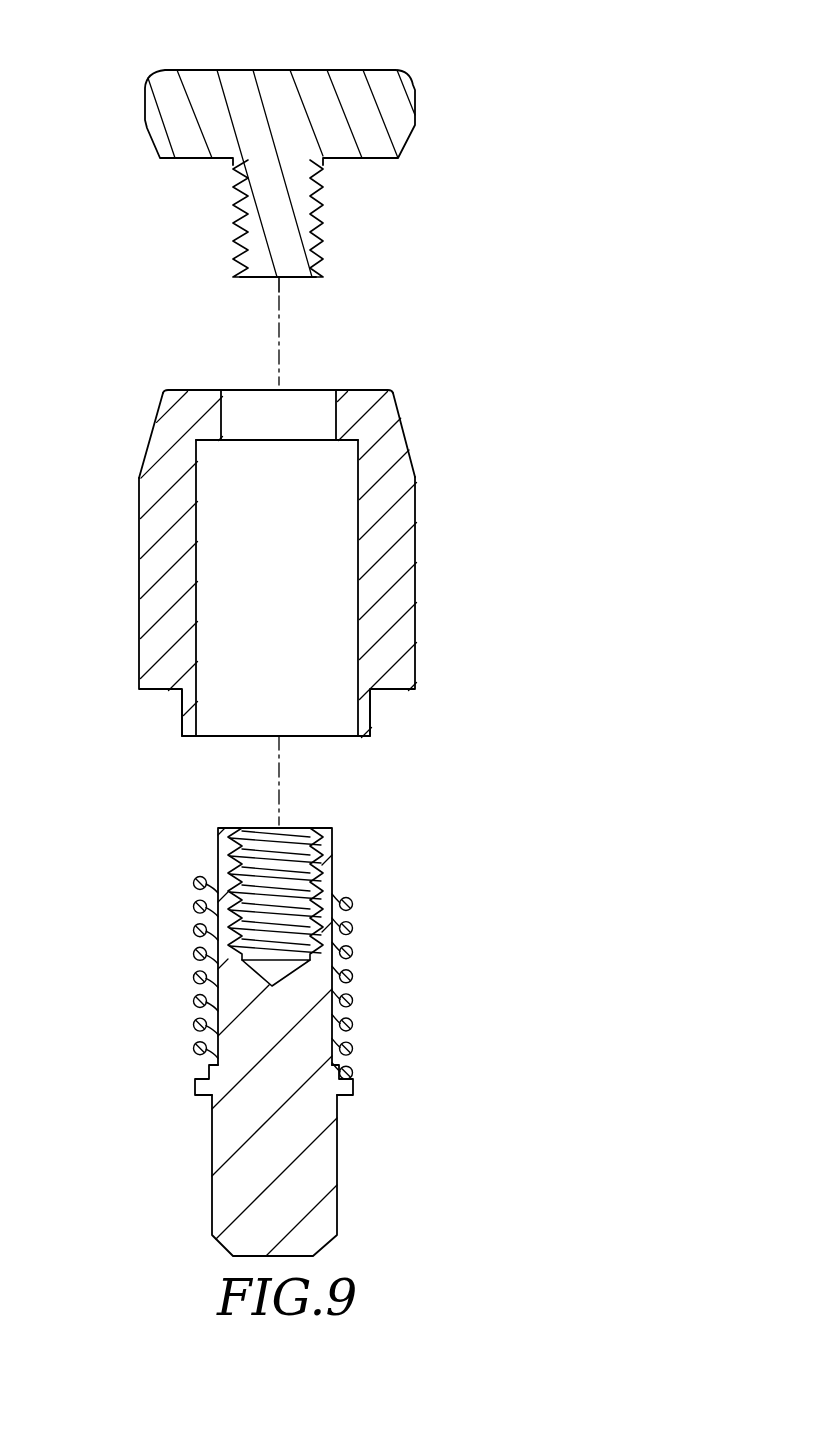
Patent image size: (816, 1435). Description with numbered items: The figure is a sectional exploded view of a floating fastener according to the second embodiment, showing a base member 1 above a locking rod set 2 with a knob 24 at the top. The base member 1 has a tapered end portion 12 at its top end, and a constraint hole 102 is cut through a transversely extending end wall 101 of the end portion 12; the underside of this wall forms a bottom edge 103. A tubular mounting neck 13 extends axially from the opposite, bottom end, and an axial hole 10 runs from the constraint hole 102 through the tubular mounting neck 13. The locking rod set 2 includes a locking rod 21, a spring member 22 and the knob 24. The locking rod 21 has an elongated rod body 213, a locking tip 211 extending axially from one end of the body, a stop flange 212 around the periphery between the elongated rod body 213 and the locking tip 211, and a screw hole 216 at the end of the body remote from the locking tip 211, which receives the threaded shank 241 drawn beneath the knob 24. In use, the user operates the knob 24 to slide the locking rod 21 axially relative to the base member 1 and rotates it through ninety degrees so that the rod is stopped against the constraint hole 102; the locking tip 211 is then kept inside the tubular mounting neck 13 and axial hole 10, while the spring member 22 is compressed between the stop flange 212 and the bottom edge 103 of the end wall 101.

The base member 1 is at (398, 603).
The axial hole 10 is at (305, 537).
The end wall 101 is at (358, 403).
The constraint hole 102 is at (333, 415).
The bottom edge 103 is at (140, 480).
The tapered end portion 12 is at (410, 443).
The tubular mounting neck 13 is at (370, 713).
The locking rod set 2 is at (73, 1261).
The locking rod 21 is at (218, 946).
The locking tip 211 is at (242, 1177).
The stop flange 212 is at (195, 1087).
The elongated rod body 213 is at (225, 862).
The screw hole 216 is at (282, 870).
The spring member 22 is at (193, 1006).
The knob 24 is at (285, 85).
The external thread 241 is at (260, 218).